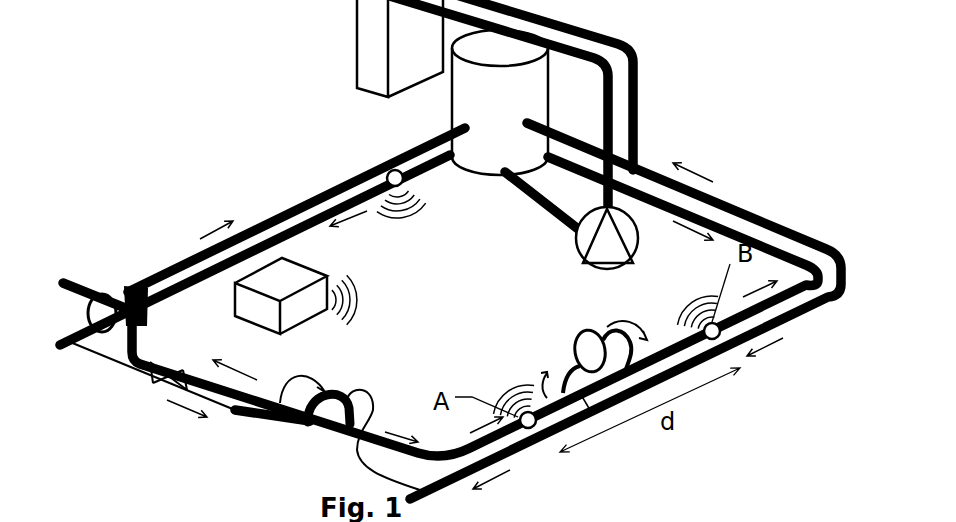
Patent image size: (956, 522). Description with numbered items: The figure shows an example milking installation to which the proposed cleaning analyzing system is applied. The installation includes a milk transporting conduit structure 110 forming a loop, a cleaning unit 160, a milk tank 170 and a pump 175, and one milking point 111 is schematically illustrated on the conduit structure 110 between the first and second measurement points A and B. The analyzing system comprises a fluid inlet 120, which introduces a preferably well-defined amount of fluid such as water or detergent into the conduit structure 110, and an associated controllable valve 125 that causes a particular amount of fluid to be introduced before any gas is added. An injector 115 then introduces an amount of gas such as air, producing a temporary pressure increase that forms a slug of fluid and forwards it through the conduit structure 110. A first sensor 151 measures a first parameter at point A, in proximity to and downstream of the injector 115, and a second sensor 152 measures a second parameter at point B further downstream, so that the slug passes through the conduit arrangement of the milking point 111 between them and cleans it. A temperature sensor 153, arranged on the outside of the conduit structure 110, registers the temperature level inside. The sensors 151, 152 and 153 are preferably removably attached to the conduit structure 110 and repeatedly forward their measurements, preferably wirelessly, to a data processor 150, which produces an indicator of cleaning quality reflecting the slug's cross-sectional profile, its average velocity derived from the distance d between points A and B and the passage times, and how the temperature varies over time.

The milk transporting conduit structure 110 is at (320, 197).
The milking point 111 is at (593, 350).
The injector 115 is at (330, 394).
The fluid inlet 120 is at (133, 292).
The controllable valve 125 is at (176, 361).
The data processor 150 is at (290, 275).
The first sensor 151 is at (535, 425).
The second sensor 152 is at (720, 338).
The temperature sensor 153 is at (403, 182).
The cleaning unit 160 is at (372, 40).
The milk tank 170 is at (470, 112).
The pump 175 is at (578, 247).